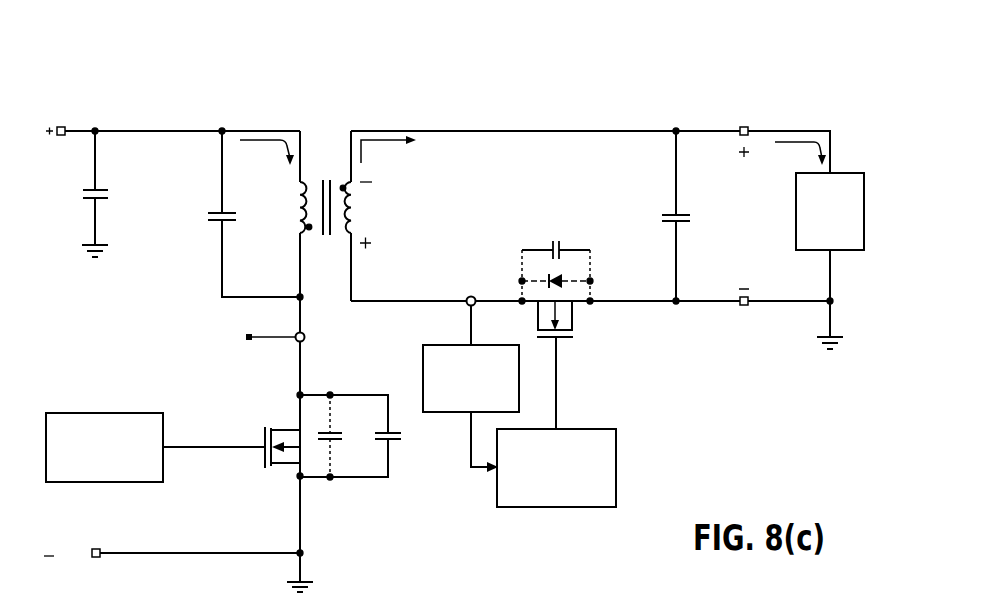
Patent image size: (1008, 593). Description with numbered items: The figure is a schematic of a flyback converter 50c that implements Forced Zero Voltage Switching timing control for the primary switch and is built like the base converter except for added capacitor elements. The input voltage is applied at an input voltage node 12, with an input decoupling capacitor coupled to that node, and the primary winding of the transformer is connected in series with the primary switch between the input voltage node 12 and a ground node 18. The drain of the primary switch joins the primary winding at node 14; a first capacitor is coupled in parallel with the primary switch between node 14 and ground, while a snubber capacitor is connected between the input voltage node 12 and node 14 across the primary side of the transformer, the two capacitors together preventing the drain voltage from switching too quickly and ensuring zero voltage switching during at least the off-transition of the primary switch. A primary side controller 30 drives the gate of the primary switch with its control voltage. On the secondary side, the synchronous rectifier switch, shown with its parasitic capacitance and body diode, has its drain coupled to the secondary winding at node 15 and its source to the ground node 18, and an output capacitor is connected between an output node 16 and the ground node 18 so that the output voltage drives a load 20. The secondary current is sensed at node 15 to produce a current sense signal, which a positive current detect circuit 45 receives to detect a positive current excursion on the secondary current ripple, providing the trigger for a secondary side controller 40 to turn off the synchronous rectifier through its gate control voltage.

The flyback converter 50c is at (816, 60).
The input voltage node 12 is at (155, 130).
The drain terminal node of primary switch 14 is at (302, 311).
The secondary current sense node 15 is at (428, 300).
The output node 16 is at (714, 129).
The ground node 18 is at (835, 338).
The load 20 is at (857, 172).
The primary side controller 30 is at (129, 413).
The secondary side controller 40 is at (616, 450).
The positive current detect circuit 45 is at (422, 366).